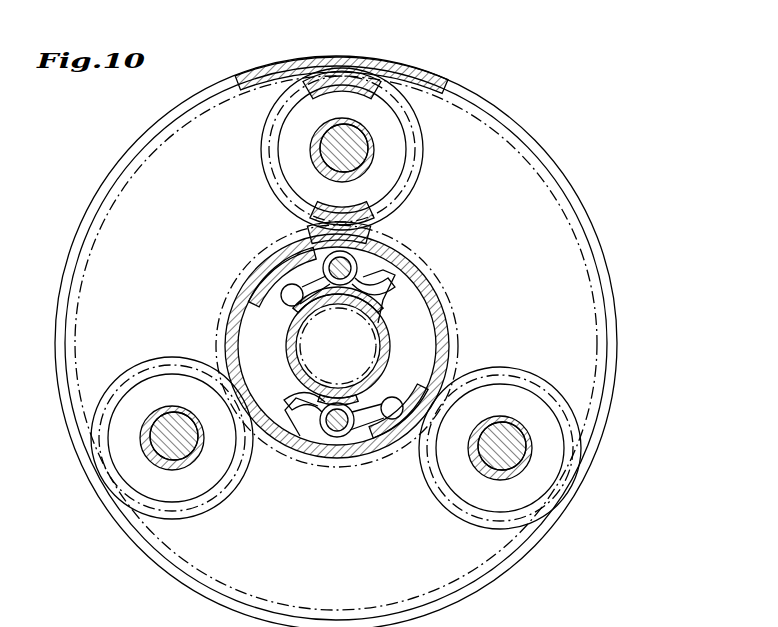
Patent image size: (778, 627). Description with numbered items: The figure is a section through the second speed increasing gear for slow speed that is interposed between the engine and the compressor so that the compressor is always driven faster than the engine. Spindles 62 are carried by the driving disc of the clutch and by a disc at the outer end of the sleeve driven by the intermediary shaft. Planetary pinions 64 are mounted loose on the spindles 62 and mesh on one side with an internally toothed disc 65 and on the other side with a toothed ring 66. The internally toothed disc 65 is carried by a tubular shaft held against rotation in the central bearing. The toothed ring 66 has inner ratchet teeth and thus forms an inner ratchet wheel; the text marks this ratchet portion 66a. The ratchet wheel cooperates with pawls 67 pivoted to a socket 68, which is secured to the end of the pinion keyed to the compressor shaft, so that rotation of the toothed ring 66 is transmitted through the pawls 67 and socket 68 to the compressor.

The spindles 62 is at (349, 158).
The planetary pinions 64 is at (415, 153).
The internally toothed disc 65 is at (585, 221).
The toothed ring 66 is at (440, 272).
The abutment on sun gear drum 66a is at (252, 302).
The pawls 67 is at (312, 289).
The socket 68 is at (390, 349).